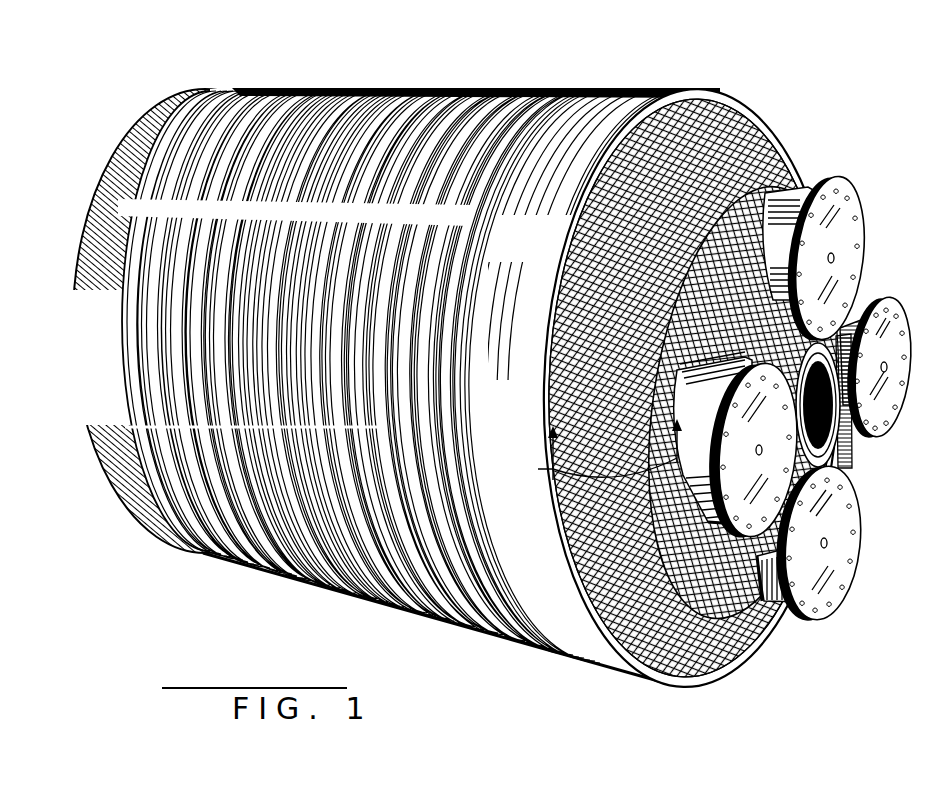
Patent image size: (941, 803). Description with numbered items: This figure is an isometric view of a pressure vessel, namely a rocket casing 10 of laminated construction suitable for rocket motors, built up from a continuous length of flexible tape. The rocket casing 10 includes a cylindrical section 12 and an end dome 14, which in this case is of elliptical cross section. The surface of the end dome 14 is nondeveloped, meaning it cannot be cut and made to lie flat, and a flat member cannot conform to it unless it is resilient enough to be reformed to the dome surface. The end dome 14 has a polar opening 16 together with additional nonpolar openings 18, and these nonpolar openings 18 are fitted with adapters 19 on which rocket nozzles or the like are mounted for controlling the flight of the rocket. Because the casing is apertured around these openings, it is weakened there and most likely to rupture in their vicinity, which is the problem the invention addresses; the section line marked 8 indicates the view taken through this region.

The rocket casing 10 is at (751, 93).
The cylindrical section 12 is at (391, 88).
The end dome 14 is at (757, 140).
The polar opening 16 is at (860, 335).
The nonpolar openings 18 is at (793, 193).
The adapters 19 is at (792, 247).
The section line 8- 8 is at (609, 449).